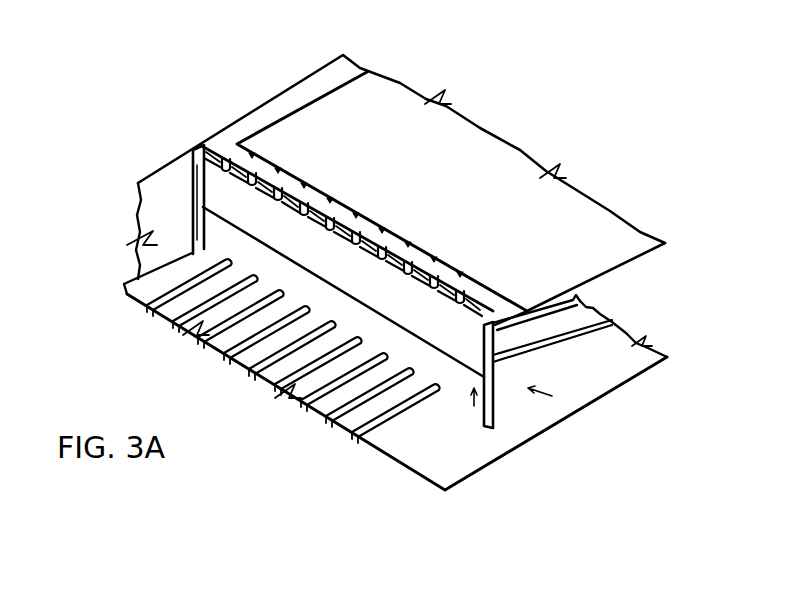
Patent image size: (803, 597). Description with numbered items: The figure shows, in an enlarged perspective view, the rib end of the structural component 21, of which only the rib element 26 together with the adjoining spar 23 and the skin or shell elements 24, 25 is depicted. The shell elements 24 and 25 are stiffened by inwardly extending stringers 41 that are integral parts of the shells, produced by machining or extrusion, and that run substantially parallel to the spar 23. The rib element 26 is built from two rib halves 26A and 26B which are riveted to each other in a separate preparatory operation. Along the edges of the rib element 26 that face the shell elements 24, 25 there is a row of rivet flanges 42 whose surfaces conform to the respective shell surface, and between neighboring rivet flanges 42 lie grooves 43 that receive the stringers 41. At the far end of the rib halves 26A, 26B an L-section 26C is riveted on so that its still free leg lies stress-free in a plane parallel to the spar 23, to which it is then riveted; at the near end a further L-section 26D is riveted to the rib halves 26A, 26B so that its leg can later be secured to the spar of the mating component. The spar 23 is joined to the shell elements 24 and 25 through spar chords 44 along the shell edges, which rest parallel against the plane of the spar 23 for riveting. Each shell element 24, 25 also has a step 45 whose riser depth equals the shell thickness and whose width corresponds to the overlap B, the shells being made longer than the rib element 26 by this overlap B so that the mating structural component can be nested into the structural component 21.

The structural component 21 is at (646, 197).
The spar 23 is at (150, 183).
The shell element 24 is at (423, 481).
The shell element 25 is at (487, 152).
The rib element 26 is at (480, 432).
The rib half 26A is at (345, 256).
The rib half 26B is at (383, 334).
The L-section 26C is at (198, 150).
The L-section 26D is at (495, 423).
The stringer 41 is at (360, 418).
The rivet flange 42 is at (376, 222).
The groove 43 is at (463, 300).
The spar chord 44 is at (130, 275).
The step 45 is at (355, 71).
The overlap B is at (578, 415).